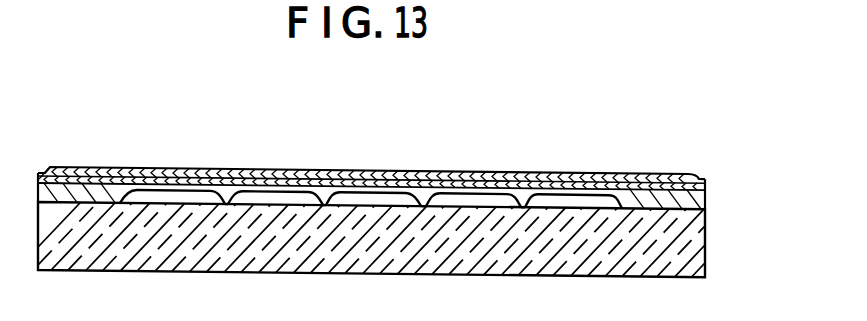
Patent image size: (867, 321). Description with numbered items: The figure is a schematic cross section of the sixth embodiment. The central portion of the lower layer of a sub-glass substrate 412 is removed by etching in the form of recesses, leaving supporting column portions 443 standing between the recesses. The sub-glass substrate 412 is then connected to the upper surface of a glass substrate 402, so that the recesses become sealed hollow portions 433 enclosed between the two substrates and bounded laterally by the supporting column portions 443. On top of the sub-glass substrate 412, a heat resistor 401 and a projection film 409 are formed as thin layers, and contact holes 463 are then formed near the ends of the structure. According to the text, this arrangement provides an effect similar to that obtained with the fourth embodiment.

The heat resistor 401 is at (553, 182).
The glass substrate 402 is at (365, 259).
The projection film 409 is at (470, 178).
The sub-glass substrate 412 is at (113, 185).
The sealed hollow portions 433 is at (266, 199).
The supporting column portions 443 is at (227, 192).
The contact holes 463 is at (69, 168).